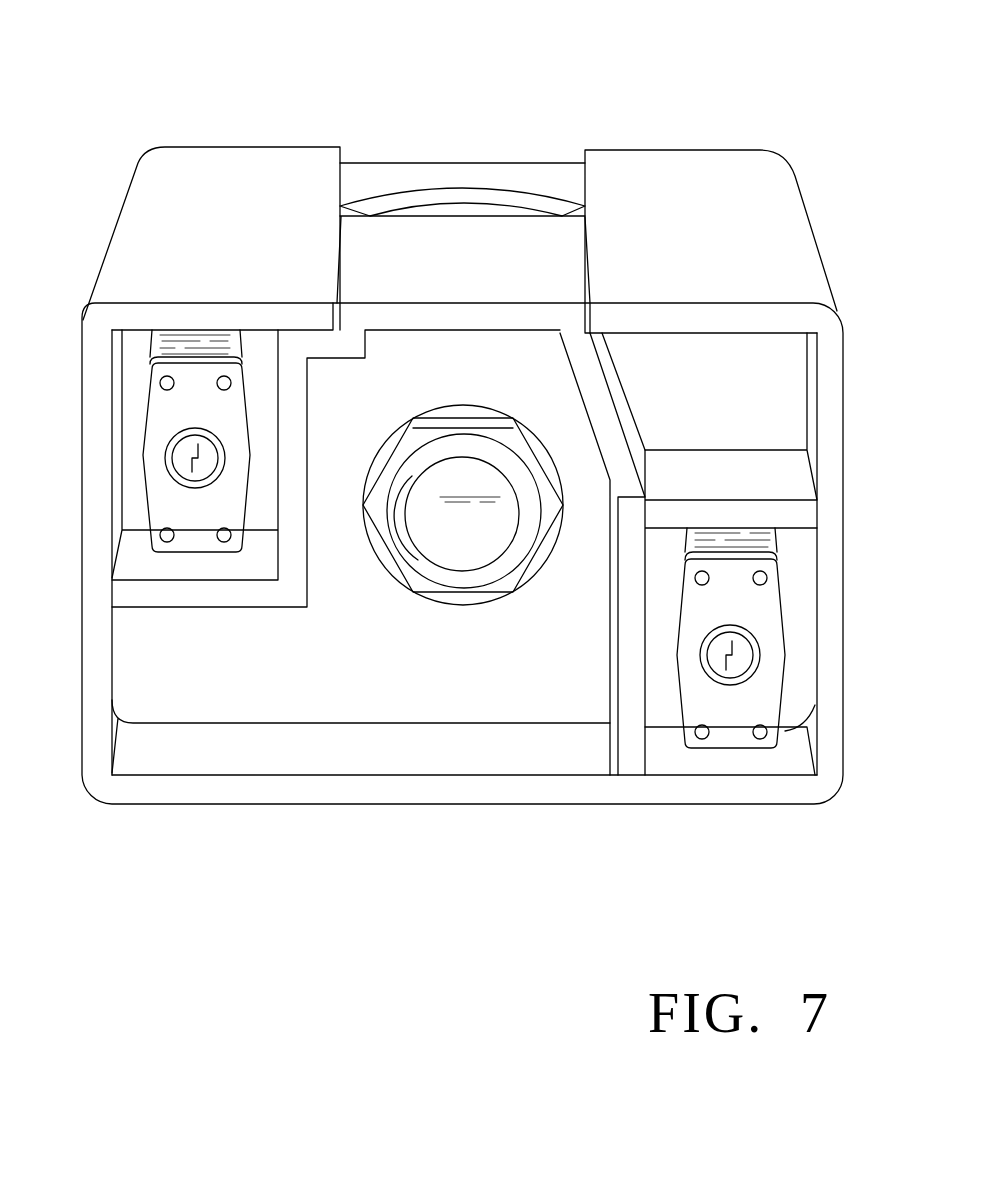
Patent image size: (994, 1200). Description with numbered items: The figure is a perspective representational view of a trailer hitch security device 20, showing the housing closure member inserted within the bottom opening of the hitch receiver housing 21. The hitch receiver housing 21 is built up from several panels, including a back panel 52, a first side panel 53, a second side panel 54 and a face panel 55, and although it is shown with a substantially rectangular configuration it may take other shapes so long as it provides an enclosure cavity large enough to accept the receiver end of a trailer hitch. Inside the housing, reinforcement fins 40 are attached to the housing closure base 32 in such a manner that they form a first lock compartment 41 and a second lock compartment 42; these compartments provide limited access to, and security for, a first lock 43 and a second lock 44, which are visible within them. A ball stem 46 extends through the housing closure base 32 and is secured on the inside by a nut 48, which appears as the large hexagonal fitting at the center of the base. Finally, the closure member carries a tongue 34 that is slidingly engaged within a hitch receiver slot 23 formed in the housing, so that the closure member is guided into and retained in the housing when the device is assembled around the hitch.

The trailer hitch security device 20 is at (170, 80).
The hitch receiver housing 21 is at (720, 136).
The hitch receiver slot 23 is at (349, 219).
The housing closure base 32 is at (385, 701).
The tongue 34 is at (570, 262).
The reinforcement fins 40 is at (300, 588).
The first lock compartment 41 is at (263, 431).
The second lock compartment 42 is at (662, 618).
The first lock 43 is at (194, 536).
The second lock 44 is at (693, 697).
The ball stem 46 is at (458, 538).
The nut 48 is at (415, 587).
The back panel 52 is at (437, 806).
The first side panel 53 is at (82, 583).
The second side panel 54 is at (845, 578).
The face panel 55 is at (258, 161).